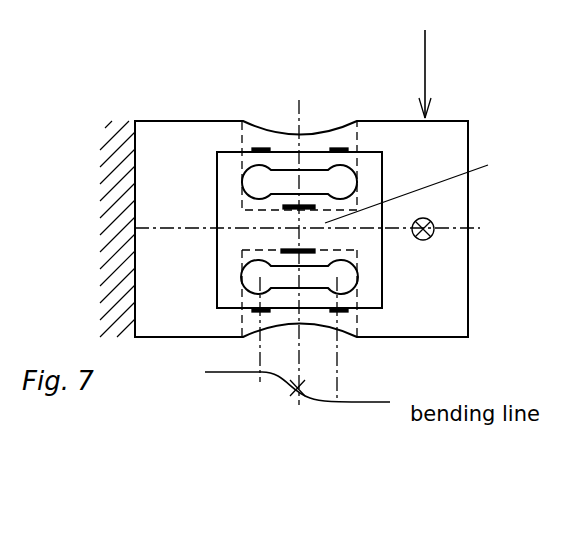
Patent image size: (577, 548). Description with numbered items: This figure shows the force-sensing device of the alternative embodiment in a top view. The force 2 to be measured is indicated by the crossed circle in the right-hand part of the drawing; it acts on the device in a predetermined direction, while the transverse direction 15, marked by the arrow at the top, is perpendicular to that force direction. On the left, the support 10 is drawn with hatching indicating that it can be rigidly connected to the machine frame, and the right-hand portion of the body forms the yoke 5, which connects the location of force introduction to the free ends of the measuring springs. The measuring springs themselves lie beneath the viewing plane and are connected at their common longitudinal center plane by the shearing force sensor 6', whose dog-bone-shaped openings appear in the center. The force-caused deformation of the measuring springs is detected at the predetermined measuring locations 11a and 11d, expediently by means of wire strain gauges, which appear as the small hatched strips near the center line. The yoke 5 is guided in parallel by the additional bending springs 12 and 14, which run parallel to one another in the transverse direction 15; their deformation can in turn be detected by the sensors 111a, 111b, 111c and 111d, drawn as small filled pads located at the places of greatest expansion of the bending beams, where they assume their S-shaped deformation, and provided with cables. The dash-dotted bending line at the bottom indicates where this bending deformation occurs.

The support 10 is at (182, 140).
The bending spring 14 is at (322, 163).
The shearing force sensor 6' is at (377, 183).
The bending spring 12 is at (310, 298).
The sensor 111a is at (340, 148).
The sensor 111b is at (340, 312).
The sensor 111c is at (250, 312).
The sensor 111d is at (258, 148).
The measuring location 11a is at (312, 205).
The measuring location 11d is at (290, 203).
The force 2 is at (435, 225).
The yoke 5 is at (455, 256).
The transverse direction 15 is at (427, 76).